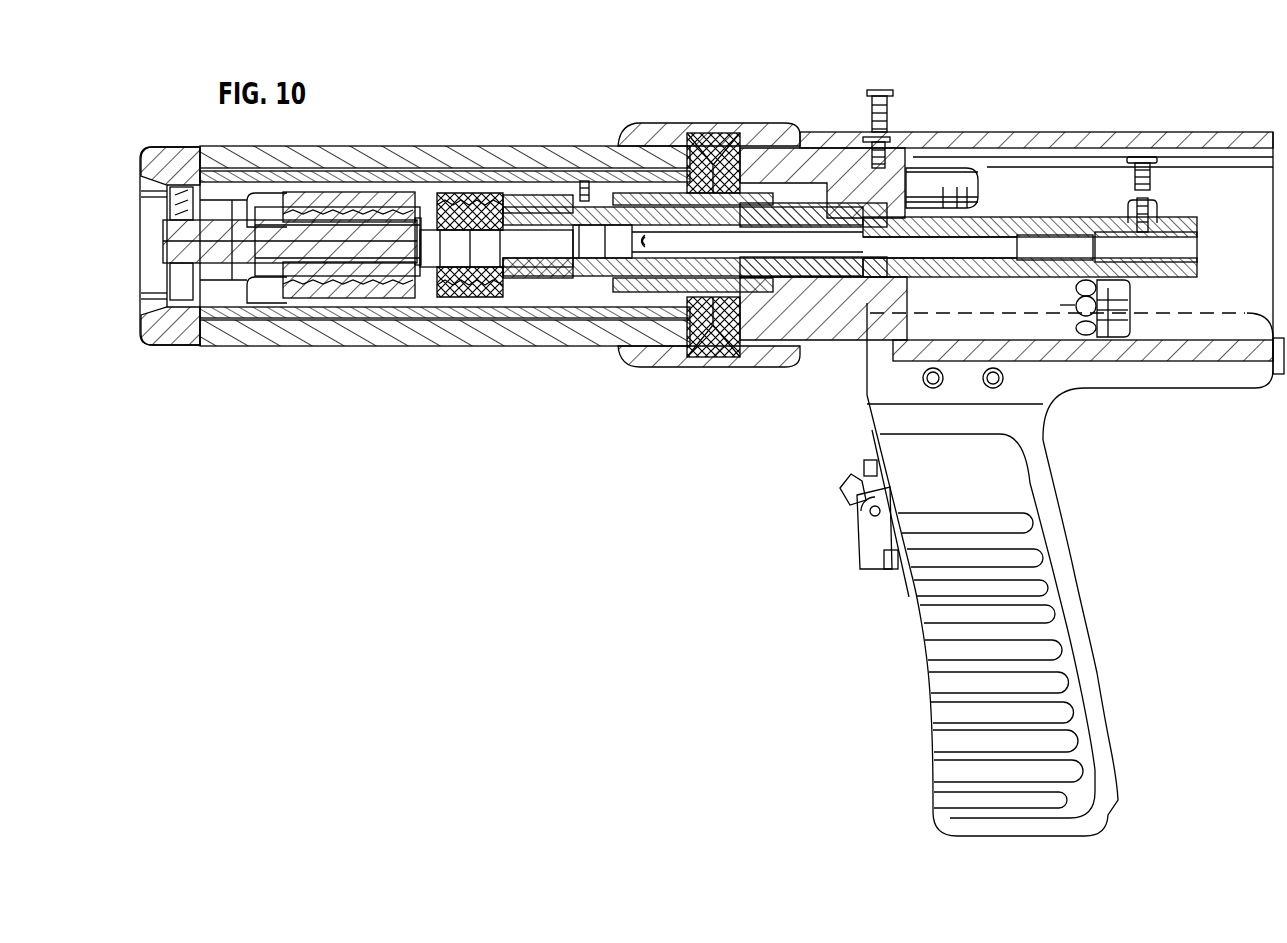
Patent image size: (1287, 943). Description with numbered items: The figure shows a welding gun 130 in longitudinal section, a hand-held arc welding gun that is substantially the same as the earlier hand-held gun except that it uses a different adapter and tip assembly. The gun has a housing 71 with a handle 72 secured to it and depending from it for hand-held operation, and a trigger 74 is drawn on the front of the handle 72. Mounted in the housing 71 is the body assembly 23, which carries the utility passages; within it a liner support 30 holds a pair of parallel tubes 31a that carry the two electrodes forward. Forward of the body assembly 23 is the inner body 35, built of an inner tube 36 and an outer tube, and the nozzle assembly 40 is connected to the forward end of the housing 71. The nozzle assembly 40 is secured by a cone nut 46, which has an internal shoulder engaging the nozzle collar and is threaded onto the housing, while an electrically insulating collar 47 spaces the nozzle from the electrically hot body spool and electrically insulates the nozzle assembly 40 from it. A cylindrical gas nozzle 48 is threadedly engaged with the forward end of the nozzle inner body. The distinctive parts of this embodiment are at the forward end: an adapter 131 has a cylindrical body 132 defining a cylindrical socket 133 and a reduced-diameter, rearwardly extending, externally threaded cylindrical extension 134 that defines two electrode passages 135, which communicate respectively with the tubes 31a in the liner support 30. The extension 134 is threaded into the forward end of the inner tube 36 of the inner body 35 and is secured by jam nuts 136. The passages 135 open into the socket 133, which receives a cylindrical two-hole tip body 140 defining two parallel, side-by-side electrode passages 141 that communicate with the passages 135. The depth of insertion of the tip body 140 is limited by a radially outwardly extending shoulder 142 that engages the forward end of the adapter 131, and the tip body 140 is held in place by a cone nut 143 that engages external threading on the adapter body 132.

The body assembly 23 is at (790, 355).
The liner support 30 is at (762, 232).
The parallel tubes 31a is at (592, 250).
The inner body 35 is at (640, 207).
The inner tube 36 is at (665, 350).
The nozzle assembly 40 is at (450, 145).
The cone nut 46 is at (714, 140).
The insulating collar 47 is at (732, 347).
The gas nozzle 48 is at (174, 158).
The housing 71 is at (1078, 145).
The handle 72 is at (1090, 600).
The trigger 74 is at (855, 548).
The welding gun 130 is at (580, 133).
The adapter 131 is at (420, 290).
The cylindrical body 132 is at (456, 195).
The cylindrical socket 133 is at (352, 262).
The cylindrical extension 134 is at (548, 280).
The electrode passages 135 is at (523, 193).
The jam nuts 136 is at (470, 300).
The two-hole tip body 140 is at (232, 212).
The electrode passages 141 is at (218, 238).
The shoulder 142 is at (283, 282).
The cone nut 143 is at (320, 195).